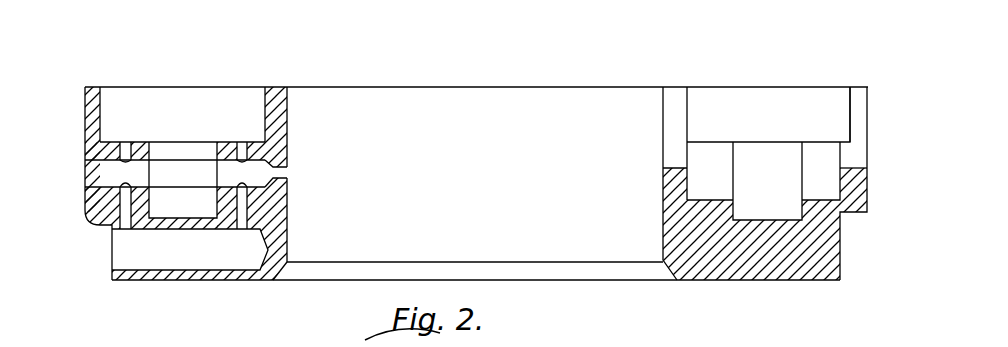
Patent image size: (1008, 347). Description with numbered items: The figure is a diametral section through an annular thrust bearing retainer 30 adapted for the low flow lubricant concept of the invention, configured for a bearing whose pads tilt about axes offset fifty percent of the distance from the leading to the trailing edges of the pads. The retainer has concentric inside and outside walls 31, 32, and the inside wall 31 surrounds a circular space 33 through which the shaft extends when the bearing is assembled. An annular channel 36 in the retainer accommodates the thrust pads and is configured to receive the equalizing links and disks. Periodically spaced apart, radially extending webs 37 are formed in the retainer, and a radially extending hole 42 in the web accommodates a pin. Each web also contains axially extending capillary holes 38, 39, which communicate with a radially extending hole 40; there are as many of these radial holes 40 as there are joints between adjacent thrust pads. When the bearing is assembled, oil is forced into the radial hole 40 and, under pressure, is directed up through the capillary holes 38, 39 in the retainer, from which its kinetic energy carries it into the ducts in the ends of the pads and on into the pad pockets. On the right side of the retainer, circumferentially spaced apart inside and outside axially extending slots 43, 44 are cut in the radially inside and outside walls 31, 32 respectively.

The bearing retainer 30 is at (660, 284).
The inside wall 31 is at (275, 93).
The outside wall 32 is at (113, 88).
The circular space 33 is at (494, 100).
The annular channel 36 is at (188, 95).
The web 37 is at (228, 210).
The capillary hole 38 is at (126, 143).
The capillary hole 39 is at (245, 143).
The radial hole 40 is at (120, 258).
The radially extending hole 42 is at (100, 187).
The inside axially extending slot 43 is at (670, 152).
The outside axially extending slot 44 is at (865, 150).